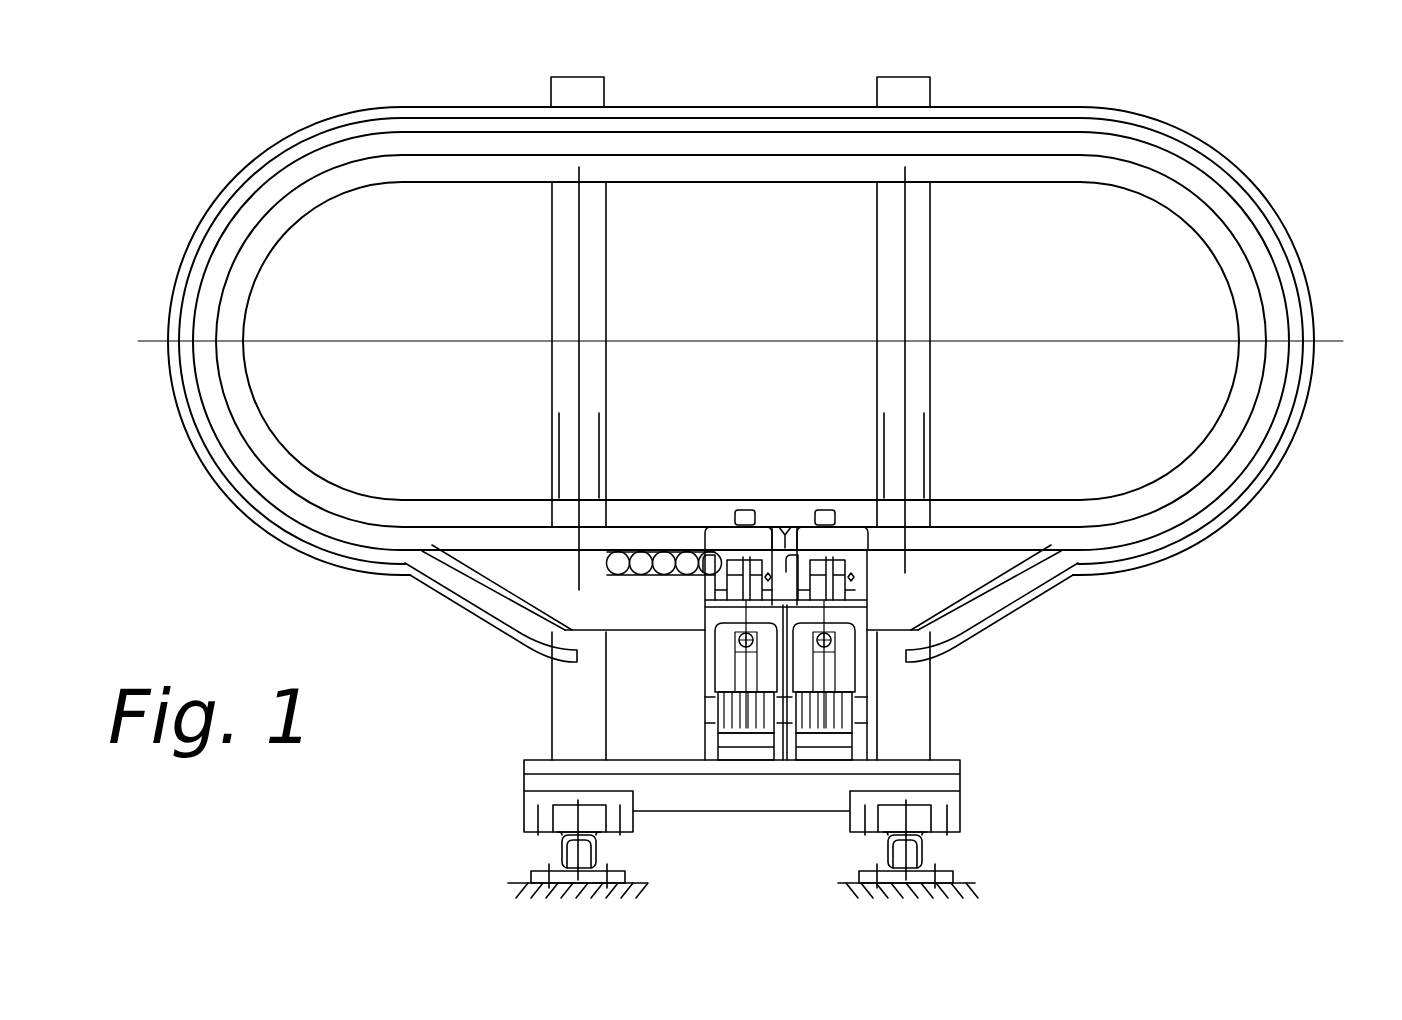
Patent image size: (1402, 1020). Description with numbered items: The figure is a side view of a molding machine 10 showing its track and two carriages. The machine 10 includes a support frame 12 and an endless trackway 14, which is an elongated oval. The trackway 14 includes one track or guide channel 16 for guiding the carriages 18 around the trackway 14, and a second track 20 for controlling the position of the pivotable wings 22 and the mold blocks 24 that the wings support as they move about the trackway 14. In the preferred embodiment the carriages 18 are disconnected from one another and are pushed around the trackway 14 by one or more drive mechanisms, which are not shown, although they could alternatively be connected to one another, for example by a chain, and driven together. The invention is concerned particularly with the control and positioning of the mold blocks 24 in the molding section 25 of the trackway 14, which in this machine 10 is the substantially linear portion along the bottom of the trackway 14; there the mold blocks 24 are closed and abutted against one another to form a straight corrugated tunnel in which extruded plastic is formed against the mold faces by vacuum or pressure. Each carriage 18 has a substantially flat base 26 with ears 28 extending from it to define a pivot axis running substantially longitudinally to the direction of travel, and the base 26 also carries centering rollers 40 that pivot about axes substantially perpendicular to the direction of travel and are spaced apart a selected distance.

The molding machine 10 is at (1100, 633).
The support frame 12 is at (590, 270).
The endless trackway 14 is at (741, 322).
The track or guide channel 16 is at (1218, 205).
The carriages 18 is at (726, 526).
The second track 20 is at (487, 590).
The pivotable wings 22 is at (712, 652).
The mold blocks 24 is at (710, 735).
The molding section 25 is at (803, 569).
The base 26 is at (810, 532).
The ears 28 is at (718, 578).
The centering rollers 40 is at (744, 508).